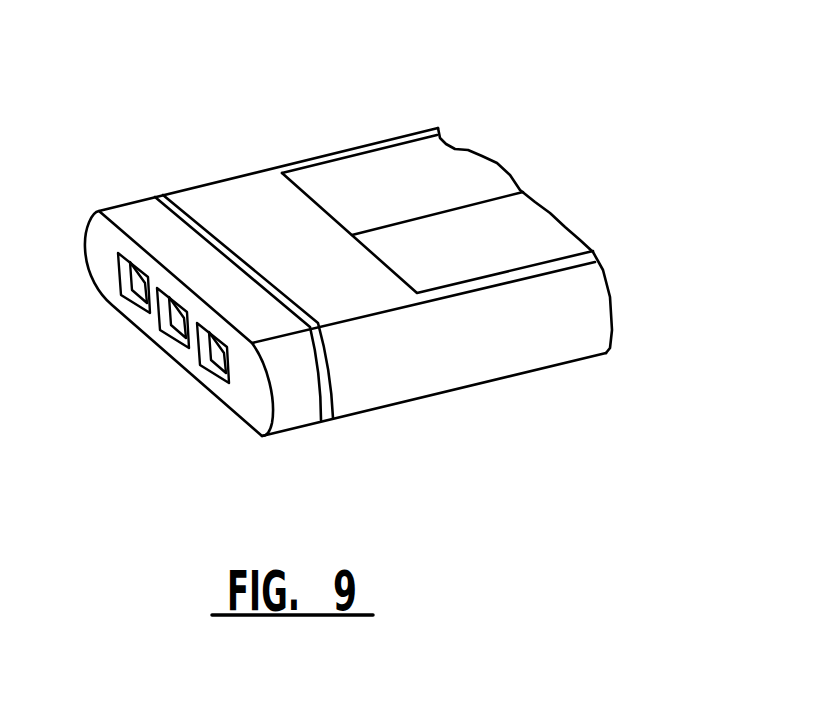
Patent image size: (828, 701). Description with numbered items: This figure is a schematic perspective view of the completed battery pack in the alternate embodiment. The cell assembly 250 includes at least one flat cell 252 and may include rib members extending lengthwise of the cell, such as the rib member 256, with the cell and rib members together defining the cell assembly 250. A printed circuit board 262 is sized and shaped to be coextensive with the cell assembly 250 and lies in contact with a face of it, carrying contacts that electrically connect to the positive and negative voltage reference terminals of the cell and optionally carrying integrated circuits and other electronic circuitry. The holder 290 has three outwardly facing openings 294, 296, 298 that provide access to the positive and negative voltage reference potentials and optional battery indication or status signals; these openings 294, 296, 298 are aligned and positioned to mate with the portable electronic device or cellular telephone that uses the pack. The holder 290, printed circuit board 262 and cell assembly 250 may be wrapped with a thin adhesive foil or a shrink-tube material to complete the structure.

The cell assembly 250 is at (330, 129).
The flat cell 252 is at (397, 183).
The rib member 256 is at (405, 375).
The printed circuit board 262 is at (155, 197).
The holder 290 is at (113, 207).
The opening 294 is at (134, 290).
The opening 296 is at (178, 326).
The opening 298 is at (220, 360).